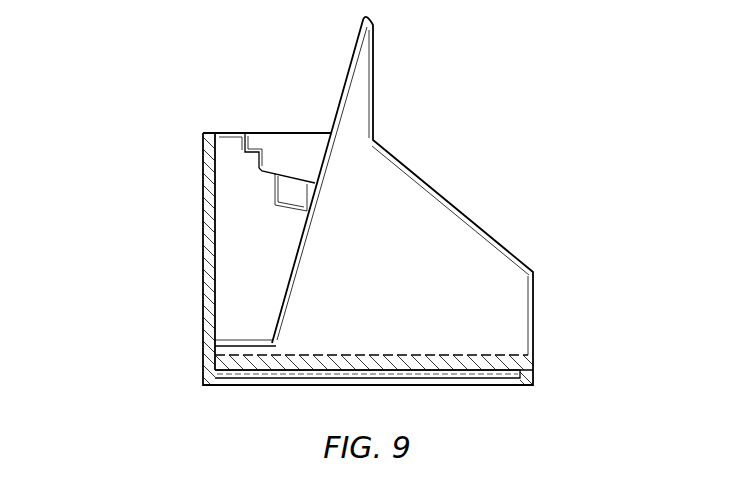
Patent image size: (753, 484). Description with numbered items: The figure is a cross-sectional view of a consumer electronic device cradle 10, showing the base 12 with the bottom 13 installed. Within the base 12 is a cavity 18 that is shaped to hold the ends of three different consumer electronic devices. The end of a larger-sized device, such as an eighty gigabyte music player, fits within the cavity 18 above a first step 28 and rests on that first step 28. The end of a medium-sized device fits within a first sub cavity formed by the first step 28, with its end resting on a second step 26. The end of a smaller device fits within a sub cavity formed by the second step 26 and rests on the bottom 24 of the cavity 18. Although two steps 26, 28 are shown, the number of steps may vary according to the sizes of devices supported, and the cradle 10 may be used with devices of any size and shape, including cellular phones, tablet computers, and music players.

The consumer electronic device cradle 10 is at (559, 169).
The base 12 is at (393, 288).
The bottom 13 is at (478, 386).
The cavity 18 is at (283, 96).
The bottom of the cavity 24 is at (288, 203).
The second step 26 is at (257, 141).
The first step 28 is at (236, 146).